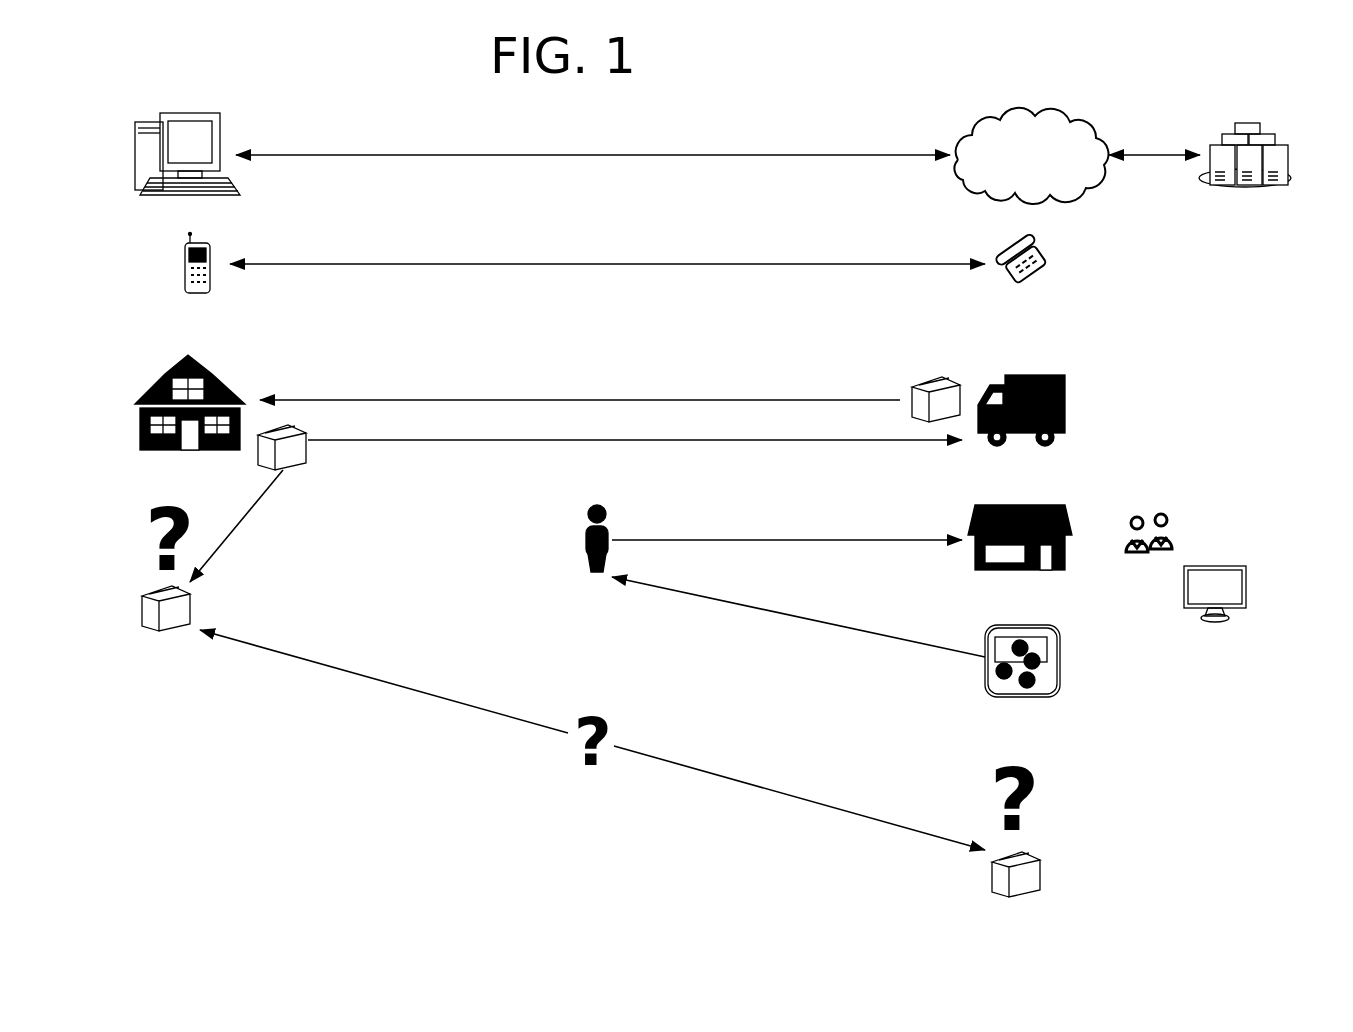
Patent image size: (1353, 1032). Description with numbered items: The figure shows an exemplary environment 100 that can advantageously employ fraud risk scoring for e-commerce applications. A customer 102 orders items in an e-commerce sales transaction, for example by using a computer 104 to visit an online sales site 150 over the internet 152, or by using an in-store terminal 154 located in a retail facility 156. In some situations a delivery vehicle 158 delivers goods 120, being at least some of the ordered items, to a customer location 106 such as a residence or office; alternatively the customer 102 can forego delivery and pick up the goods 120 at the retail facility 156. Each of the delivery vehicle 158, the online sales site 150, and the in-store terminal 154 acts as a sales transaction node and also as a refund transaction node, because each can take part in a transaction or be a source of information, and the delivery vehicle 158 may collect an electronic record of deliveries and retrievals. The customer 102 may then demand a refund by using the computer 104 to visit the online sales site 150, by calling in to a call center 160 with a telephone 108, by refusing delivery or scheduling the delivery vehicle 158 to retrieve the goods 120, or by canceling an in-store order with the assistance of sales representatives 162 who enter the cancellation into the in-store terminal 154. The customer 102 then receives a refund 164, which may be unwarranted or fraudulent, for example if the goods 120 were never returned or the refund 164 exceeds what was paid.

The environment 100 is at (290, 872).
The customer 102 is at (588, 528).
The computer 104 is at (225, 192).
The customer location 106 is at (228, 372).
The telephone 108 is at (200, 293).
The goods 120 is at (915, 378).
The online sales site 150 is at (1253, 188).
The internet 152 is at (1013, 169).
The in-store terminal 154 is at (1246, 568).
The retail facility 156 is at (1062, 508).
The delivery vehicle 158 is at (1062, 372).
The call center 160 is at (1046, 258).
The sales representatives 162 is at (1184, 508).
The refund 164 is at (1058, 690).